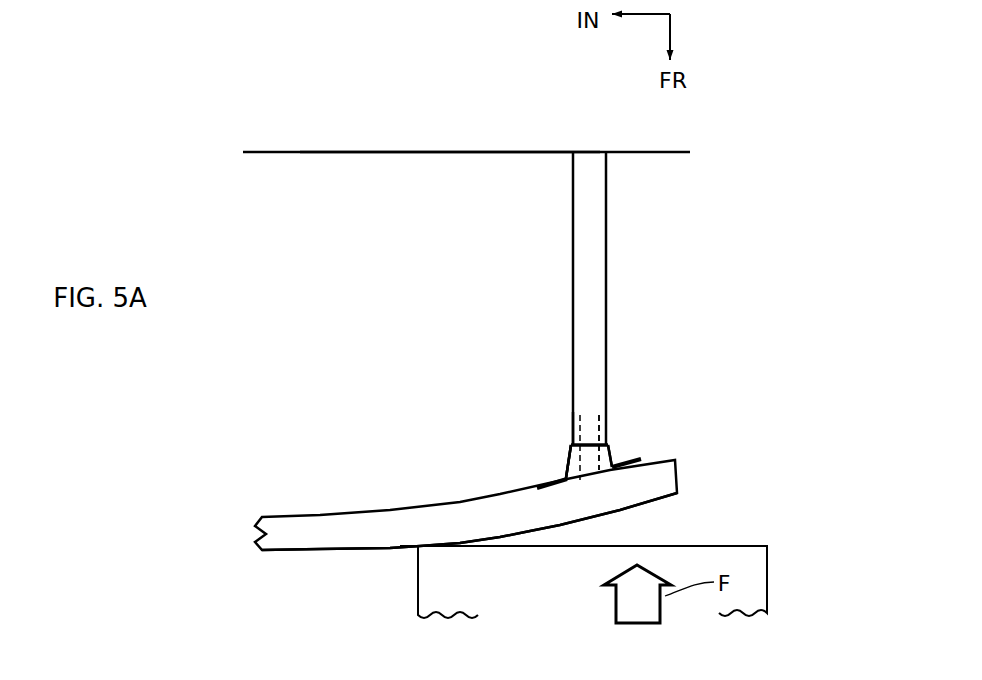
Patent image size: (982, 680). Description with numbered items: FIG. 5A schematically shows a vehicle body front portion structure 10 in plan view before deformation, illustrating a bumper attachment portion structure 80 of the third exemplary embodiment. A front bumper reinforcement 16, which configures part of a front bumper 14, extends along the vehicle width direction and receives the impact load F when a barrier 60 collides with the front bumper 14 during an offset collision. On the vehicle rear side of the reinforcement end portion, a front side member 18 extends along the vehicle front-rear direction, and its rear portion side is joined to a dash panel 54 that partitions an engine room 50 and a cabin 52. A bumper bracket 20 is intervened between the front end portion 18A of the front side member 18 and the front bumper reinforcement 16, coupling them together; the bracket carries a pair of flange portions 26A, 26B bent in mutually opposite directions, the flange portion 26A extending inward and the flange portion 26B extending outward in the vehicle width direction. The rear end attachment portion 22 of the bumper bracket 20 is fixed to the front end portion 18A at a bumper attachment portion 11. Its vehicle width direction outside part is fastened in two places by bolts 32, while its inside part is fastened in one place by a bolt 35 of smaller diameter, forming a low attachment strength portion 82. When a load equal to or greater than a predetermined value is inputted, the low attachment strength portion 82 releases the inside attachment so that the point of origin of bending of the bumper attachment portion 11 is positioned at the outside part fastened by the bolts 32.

The vehicle body front portion structure 10 is at (753, 290).
The bumper attachment portion 11 is at (728, 415).
The front bumper 14 is at (350, 553).
The front bumper reinforcement 16 is at (300, 515).
The front side member 18 is at (618, 290).
The front end portion of front side member 18A is at (606, 440).
The bumper bracket 20 is at (548, 461).
The rear end attachment portion 22 is at (583, 420).
The flange portion 26A is at (552, 485).
The flange portion 26B is at (642, 461).
The bolt 32 is at (600, 413).
The bolt 35 is at (572, 413).
The engine room 50 is at (412, 300).
The cabin 52 is at (370, 135).
The dash panel 54 is at (453, 153).
The barrier 60 is at (770, 580).
The bumper attachment portion structure 80 is at (700, 413).
The low attachment strength portion 82 is at (565, 441).